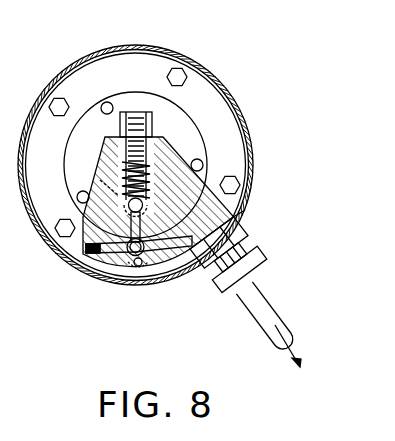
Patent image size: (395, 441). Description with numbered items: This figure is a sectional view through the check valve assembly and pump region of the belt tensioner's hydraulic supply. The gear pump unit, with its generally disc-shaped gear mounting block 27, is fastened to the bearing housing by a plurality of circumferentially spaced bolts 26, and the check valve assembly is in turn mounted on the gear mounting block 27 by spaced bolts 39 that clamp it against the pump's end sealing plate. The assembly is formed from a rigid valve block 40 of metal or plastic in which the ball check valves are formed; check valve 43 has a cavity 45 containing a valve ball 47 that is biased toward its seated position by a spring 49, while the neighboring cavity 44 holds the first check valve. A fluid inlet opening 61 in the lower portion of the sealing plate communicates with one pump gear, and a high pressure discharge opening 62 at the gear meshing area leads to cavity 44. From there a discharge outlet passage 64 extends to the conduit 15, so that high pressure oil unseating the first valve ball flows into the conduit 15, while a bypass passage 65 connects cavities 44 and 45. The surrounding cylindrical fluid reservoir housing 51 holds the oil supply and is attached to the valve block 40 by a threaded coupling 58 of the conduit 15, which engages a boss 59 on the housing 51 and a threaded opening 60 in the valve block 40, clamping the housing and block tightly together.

The conduit 15 is at (273, 331).
The bolts 26 is at (198, 65).
The gear mounting block 27 is at (231, 108).
The bolts 39 is at (107, 102).
The valve block 40 is at (244, 214).
The ball check valve 43 is at (152, 151).
The cavity 44 is at (111, 272).
The cavity 45 is at (127, 160).
The valve ball 47 is at (100, 213).
The spring 49 is at (126, 182).
The fluid reservoir housing 51 is at (136, 45).
The threaded coupling 58 is at (244, 270).
The boss 59 is at (246, 238).
The threaded opening 60 is at (195, 265).
The fluid inlet opening 61 is at (127, 280).
The high pressure discharge opening 62 is at (108, 192).
The discharge outlet passage 64 is at (150, 208).
The bypass passage 65 is at (87, 253).